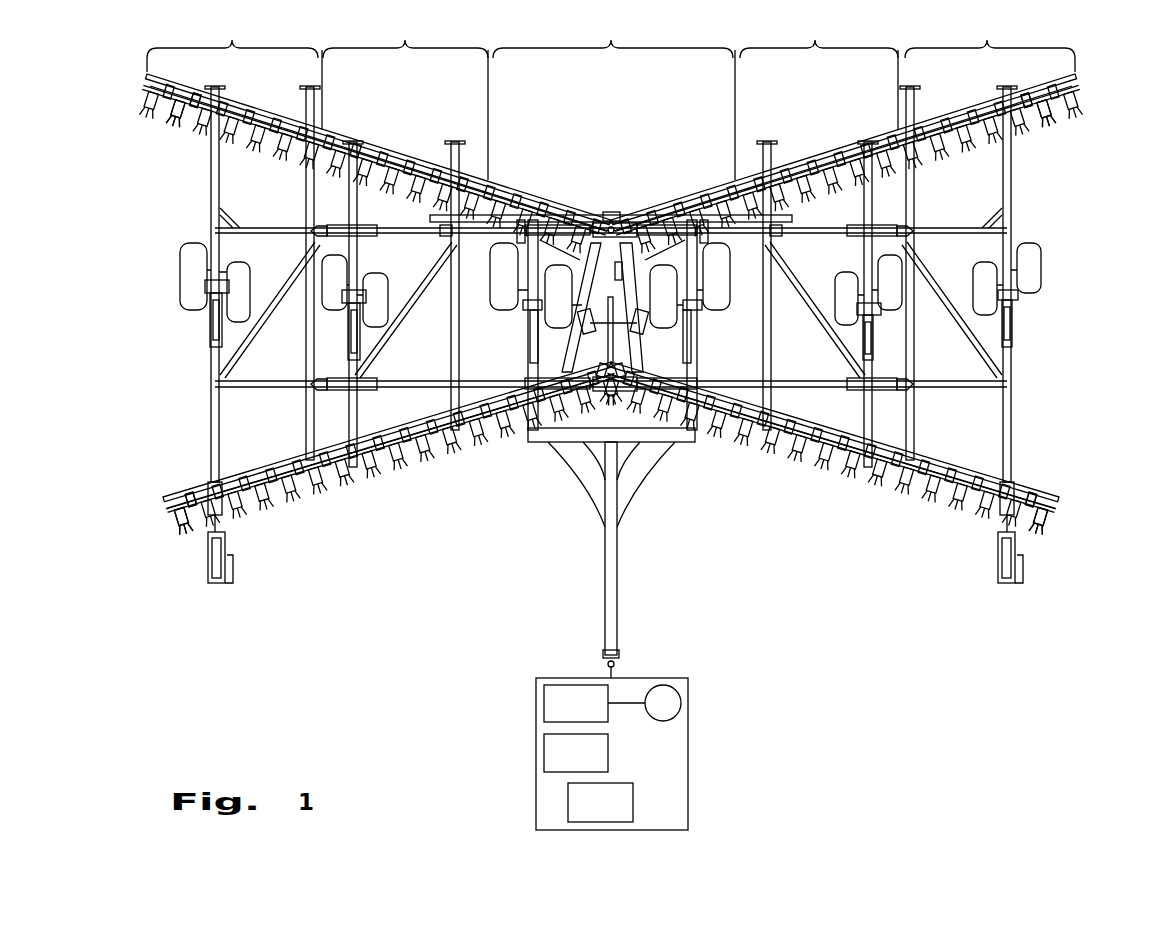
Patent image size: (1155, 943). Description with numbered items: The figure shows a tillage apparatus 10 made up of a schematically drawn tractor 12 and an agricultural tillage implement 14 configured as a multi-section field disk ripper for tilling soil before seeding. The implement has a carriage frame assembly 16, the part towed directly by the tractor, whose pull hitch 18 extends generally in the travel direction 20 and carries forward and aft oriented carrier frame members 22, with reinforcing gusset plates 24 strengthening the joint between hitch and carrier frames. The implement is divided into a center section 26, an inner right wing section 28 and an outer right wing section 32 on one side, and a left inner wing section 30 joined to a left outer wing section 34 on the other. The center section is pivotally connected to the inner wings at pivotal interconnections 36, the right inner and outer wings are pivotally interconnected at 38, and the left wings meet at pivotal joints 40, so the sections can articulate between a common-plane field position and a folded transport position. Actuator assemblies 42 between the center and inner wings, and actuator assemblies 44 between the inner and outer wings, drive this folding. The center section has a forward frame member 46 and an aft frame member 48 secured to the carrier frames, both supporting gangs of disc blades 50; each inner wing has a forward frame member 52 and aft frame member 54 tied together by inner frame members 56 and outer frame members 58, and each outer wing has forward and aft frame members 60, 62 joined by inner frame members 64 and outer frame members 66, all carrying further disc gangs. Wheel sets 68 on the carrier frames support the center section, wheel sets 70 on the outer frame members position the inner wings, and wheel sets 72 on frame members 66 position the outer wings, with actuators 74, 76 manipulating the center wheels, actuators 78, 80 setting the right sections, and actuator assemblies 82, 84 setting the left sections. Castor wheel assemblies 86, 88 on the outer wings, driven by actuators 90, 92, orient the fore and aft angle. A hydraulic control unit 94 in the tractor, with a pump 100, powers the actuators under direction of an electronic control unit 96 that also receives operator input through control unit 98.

The tillage apparatus 10 is at (878, 680).
The tractor 12 is at (690, 740).
The agricultural tillage implement 14 is at (790, 485).
The carriage frame assembly 16 is at (691, 447).
The pull hitch 18 is at (618, 595).
The travel direction 20 is at (543, 628).
The carrier frame members 22 is at (528, 430).
The reinforcing gusset plates 24 is at (578, 485).
The center section 26 is at (611, 94).
The inner right wing section 28 is at (819, 69).
The left inner wing section 30 is at (405, 69).
The outer right wing section 32 is at (990, 40).
The left outer wing section 34 is at (232, 40).
The pivotal interconnections 36 is at (495, 190).
The pivotal interconnection 38 is at (868, 142).
The pivotal joints 40 is at (325, 135).
The actuator assemblies 42 is at (565, 214).
The actuator assemblies 44 is at (399, 225).
The forward frame member 46 is at (562, 392).
The aft frame member 48 is at (596, 212).
The gangs of disc blades 50 is at (253, 116).
The forward frame member 52 is at (400, 455).
The aft frame member 54 is at (372, 160).
The inner frame members 56 is at (462, 325).
The outer frame members 58 is at (360, 255).
The forward frame member 60 is at (196, 520).
The aft frame member 62 is at (183, 102).
The inner frame members 64 is at (305, 425).
The outer frame members 66 is at (209, 420).
The wheel sets 68 is at (503, 314).
The wheel sets 70 is at (380, 324).
The wheel sets 72 is at (196, 292).
The actuator 74 is at (538, 356).
The actuator 76 is at (686, 356).
The actuator 78 is at (843, 340).
The actuator 80 is at (1013, 338).
The actuator assembly 82 is at (346, 345).
The actuator assembly 84 is at (208, 340).
The castor wheel assembly 86 is at (1025, 575).
The castor wheel assembly 88 is at (206, 575).
The actuator 90 is at (1012, 492).
The actuator 92 is at (205, 495).
The hydraulic control unit 94 is at (548, 700).
The electronic control unit 96 is at (544, 752).
The control unit 98 is at (625, 802).
The pump 100 is at (683, 700).